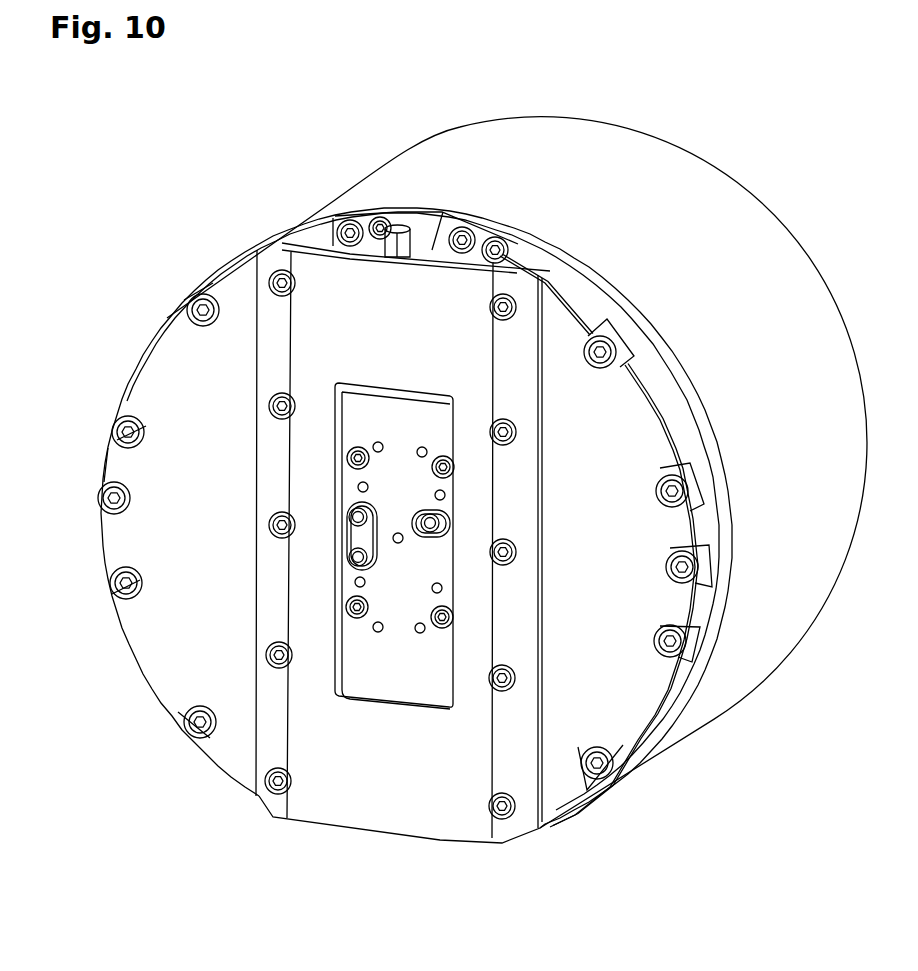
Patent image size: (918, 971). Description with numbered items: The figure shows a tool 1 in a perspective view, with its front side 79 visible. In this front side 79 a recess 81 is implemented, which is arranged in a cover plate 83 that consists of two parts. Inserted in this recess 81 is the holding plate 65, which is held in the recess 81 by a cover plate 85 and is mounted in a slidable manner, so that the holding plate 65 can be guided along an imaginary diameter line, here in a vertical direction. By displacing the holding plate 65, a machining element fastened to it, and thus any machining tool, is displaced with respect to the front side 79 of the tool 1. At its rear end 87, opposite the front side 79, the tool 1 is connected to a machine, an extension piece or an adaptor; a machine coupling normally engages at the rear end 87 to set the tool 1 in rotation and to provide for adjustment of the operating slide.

The tool 1 is at (198, 238).
The holding plate 65 is at (410, 663).
The front side 79 is at (183, 622).
The recess 81 is at (333, 214).
The cover plate 83 is at (683, 680).
The cover plate 85 is at (328, 802).
The rear end 87 is at (718, 172).